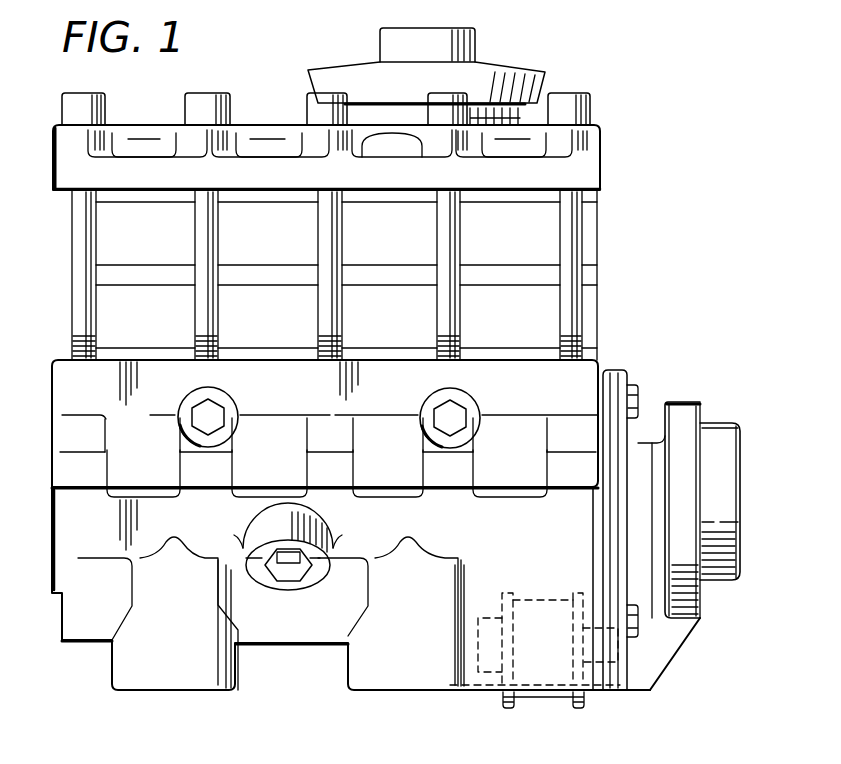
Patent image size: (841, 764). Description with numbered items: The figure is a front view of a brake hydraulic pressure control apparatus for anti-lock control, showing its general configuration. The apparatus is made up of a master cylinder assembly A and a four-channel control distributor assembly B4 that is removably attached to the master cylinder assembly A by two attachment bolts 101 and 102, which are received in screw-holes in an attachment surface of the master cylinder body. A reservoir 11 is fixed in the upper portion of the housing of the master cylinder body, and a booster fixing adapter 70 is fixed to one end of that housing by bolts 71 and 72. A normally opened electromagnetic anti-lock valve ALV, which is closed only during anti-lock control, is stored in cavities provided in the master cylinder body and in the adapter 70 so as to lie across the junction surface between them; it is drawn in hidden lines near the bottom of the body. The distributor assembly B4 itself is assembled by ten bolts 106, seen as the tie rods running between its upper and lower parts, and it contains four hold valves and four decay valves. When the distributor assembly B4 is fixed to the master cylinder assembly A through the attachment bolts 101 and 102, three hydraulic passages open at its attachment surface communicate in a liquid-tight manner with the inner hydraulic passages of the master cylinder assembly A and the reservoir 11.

The reservoir 11 is at (533, 80).
The bolts 106 is at (82, 266).
The attachment bolt 101 is at (213, 410).
The attachment bolt 102 is at (452, 408).
The booster fixing adapter 70 is at (680, 408).
The bolt 71 is at (633, 386).
The bolt 72 is at (640, 620).
The anti-lock valve ALV is at (540, 700).
The four-channel control distributor assembly B4 is at (666, 303).
The master cylinder assembly A is at (775, 505).